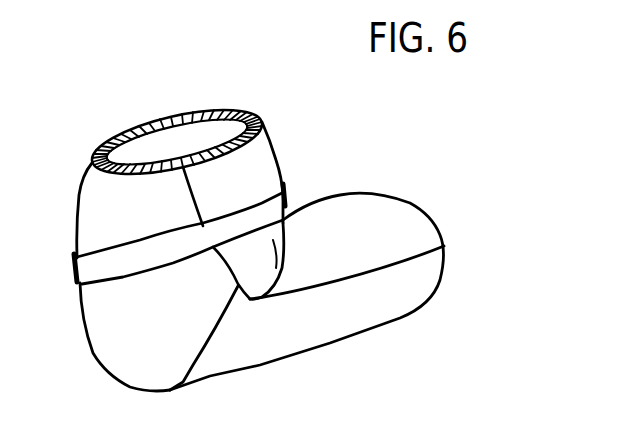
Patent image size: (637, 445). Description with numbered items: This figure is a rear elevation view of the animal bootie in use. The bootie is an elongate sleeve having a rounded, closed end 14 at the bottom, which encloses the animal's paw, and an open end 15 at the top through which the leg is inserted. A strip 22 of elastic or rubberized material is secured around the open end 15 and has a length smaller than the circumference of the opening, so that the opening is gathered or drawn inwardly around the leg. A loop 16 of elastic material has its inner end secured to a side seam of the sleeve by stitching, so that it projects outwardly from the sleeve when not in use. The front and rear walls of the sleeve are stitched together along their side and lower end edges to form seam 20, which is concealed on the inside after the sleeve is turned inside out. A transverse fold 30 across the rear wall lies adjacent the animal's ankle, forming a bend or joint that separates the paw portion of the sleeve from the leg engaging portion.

The closed end 14 is at (426, 220).
The open end 15 is at (185, 113).
The loop 16 is at (287, 190).
The seam 20 is at (310, 291).
The strip 22 is at (265, 115).
The transverse fold 30 is at (190, 363).